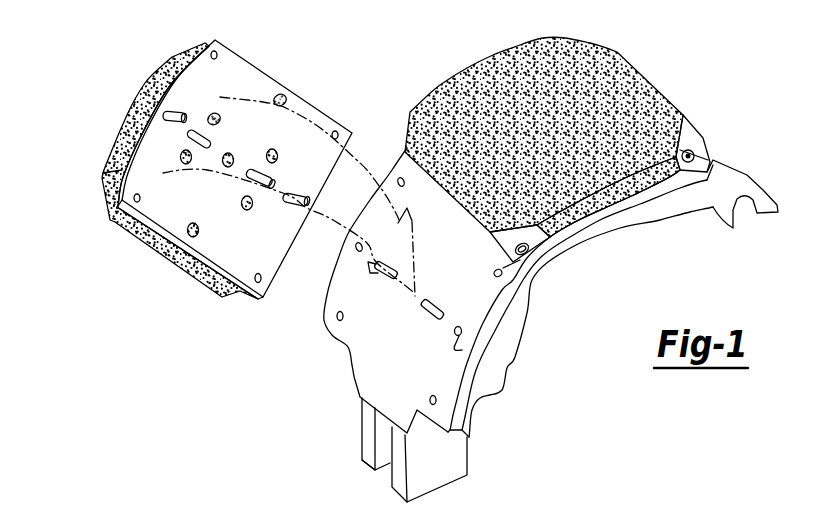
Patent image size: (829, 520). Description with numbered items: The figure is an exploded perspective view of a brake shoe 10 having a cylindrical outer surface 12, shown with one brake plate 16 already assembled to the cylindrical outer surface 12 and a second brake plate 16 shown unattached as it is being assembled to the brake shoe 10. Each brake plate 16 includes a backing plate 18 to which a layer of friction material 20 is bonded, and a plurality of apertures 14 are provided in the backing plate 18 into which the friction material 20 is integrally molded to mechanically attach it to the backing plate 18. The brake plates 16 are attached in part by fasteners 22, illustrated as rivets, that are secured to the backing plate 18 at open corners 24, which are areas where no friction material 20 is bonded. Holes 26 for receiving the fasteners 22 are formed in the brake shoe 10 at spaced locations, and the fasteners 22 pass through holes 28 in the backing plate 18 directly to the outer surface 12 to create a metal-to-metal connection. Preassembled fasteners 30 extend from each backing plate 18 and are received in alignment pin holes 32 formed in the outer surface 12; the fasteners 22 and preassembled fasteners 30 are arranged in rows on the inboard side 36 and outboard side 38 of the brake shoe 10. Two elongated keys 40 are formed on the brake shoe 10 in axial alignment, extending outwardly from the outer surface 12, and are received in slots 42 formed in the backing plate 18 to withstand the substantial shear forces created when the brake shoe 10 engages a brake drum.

The brake shoe 10 is at (745, 175).
The cylindrical outer surface 12 is at (360, 373).
The apertures 14 is at (275, 101).
The brake plate 16 is at (493, 57).
The backing plate 18 is at (238, 68).
The friction material 20 is at (147, 77).
The fasteners 22 is at (690, 150).
The open corners 24 is at (680, 168).
The holes 26 is at (522, 255).
The holes 28 is at (217, 44).
The preassembled fasteners 30 is at (171, 124).
The alignment pin holes 32 is at (462, 350).
The inboard side 36 is at (486, 408).
The outboard side 38 is at (340, 352).
The keys 40 is at (442, 313).
The slots 42 is at (273, 182).